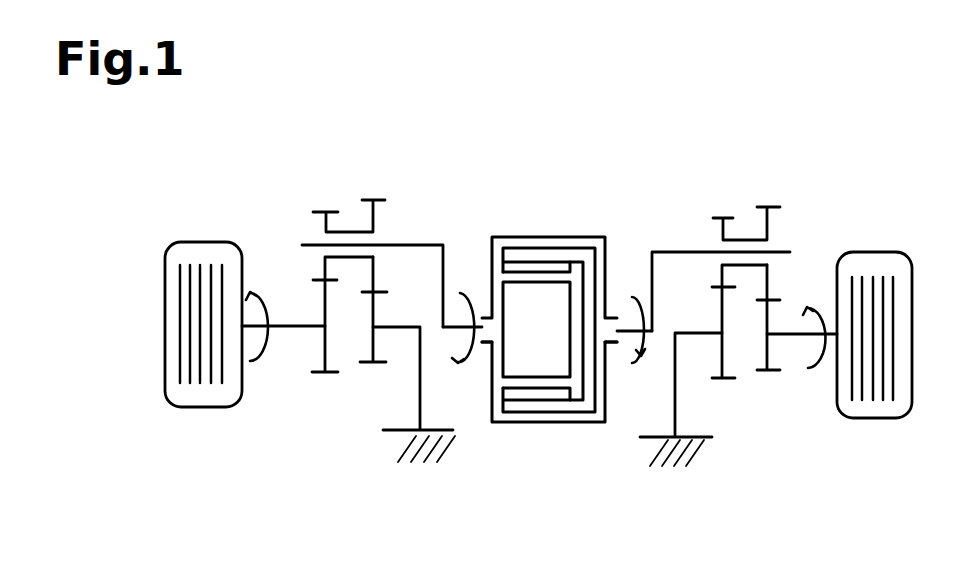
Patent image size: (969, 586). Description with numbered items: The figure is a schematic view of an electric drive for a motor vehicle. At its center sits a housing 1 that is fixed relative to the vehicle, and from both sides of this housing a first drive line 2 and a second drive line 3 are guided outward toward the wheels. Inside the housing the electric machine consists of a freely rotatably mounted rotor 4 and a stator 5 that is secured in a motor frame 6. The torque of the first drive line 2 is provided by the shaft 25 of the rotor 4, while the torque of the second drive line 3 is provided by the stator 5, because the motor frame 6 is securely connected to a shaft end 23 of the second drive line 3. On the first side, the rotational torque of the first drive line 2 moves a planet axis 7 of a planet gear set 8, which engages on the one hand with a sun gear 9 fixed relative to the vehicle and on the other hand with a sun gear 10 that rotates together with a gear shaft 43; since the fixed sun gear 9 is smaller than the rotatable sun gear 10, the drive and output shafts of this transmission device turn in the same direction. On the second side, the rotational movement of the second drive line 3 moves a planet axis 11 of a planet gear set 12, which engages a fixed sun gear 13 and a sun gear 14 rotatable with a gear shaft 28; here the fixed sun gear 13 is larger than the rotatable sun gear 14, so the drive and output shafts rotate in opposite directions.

The housing 1 is at (553, 237).
The first drive line 2 is at (457, 303).
The second drive line 3 is at (635, 325).
The rotor 4 is at (537, 307).
The stator 5 is at (558, 263).
The motor frame 6 is at (590, 277).
The planet axis 7 is at (403, 245).
The planet gear set 8 is at (347, 232).
The sun gear 9 is at (375, 308).
The sun gear 10 is at (322, 293).
The planet axis 11 is at (667, 252).
The planet gear set 12 is at (743, 240).
The sun gear 13 is at (722, 313).
The sun gear 14 is at (770, 313).
The shaft end 23 is at (483, 343).
The shaft 25 is at (610, 343).
The gear shaft 28 is at (825, 335).
The gear shaft 43 is at (290, 325).